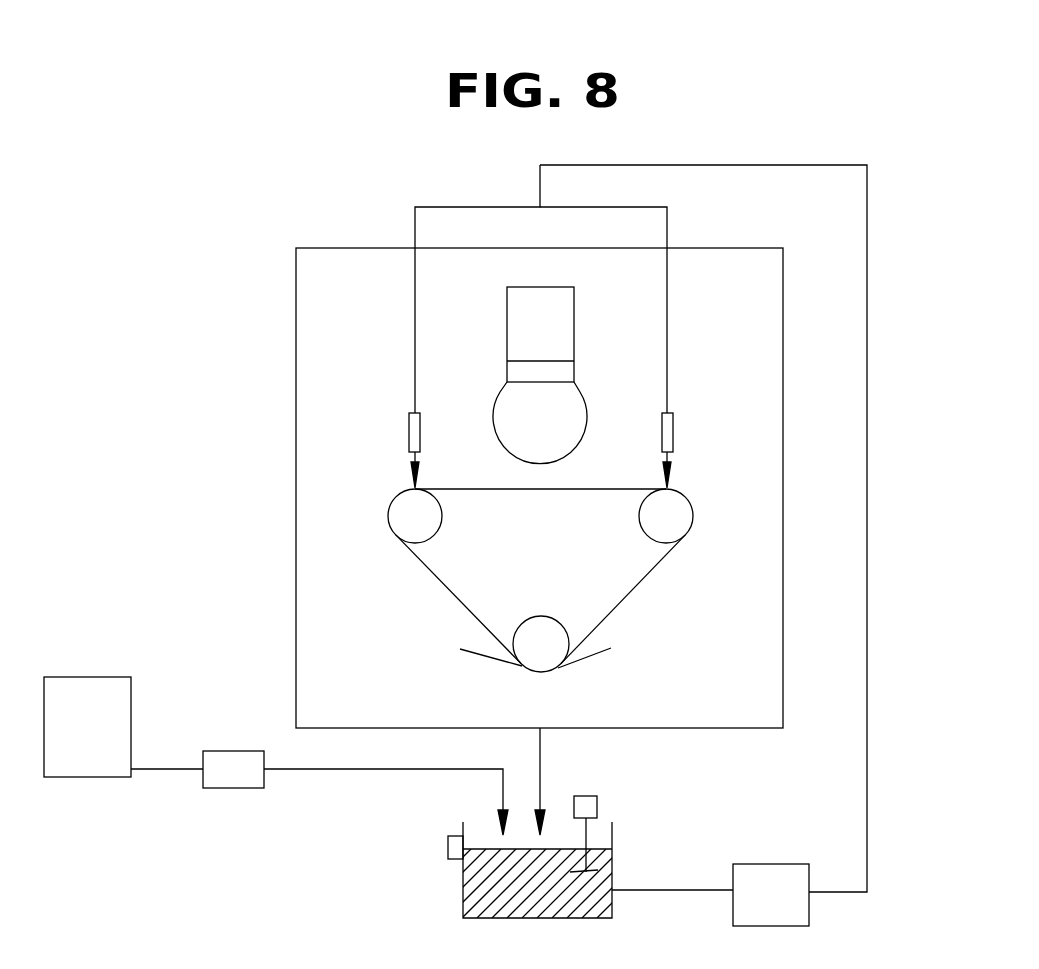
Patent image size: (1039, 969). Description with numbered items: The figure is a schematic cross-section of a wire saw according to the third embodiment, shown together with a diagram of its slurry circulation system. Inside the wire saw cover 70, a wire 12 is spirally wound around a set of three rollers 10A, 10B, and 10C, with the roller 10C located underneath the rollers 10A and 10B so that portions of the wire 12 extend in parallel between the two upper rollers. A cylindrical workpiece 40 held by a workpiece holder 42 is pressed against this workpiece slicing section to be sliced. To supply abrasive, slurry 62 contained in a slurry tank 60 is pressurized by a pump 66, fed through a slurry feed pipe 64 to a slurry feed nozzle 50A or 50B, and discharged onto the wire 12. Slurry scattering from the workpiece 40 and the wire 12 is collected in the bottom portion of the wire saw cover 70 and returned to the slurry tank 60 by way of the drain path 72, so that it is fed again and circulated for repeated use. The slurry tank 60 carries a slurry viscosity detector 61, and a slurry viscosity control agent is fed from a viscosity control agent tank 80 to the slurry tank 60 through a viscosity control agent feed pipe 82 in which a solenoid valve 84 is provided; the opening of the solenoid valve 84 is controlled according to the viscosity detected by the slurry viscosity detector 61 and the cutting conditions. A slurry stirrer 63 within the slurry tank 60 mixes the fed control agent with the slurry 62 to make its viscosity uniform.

The roller 10A is at (442, 527).
The roller 10B is at (665, 519).
The roller 10C is at (547, 645).
The wire 12 is at (457, 600).
The cylindrical workpiece 40 is at (587, 403).
The workpiece holder 42 is at (507, 330).
The slurry feed nozzle 50A is at (408, 432).
The slurry feed nozzle 50B is at (673, 433).
The slurry tank 60 is at (612, 832).
The slurry viscosity detector 61 is at (448, 848).
The slurry 62 is at (478, 898).
The slurry stirrer 63 is at (597, 806).
The slurry feed pipe 64 is at (867, 670).
The pump 66 is at (777, 864).
The wire saw cover 70 is at (296, 578).
The drain 72 is at (548, 757).
The viscosity control agent tank 80 is at (90, 777).
The viscosity control agent feed pipe 82 is at (165, 769).
The solenoid valve 84 is at (242, 788).